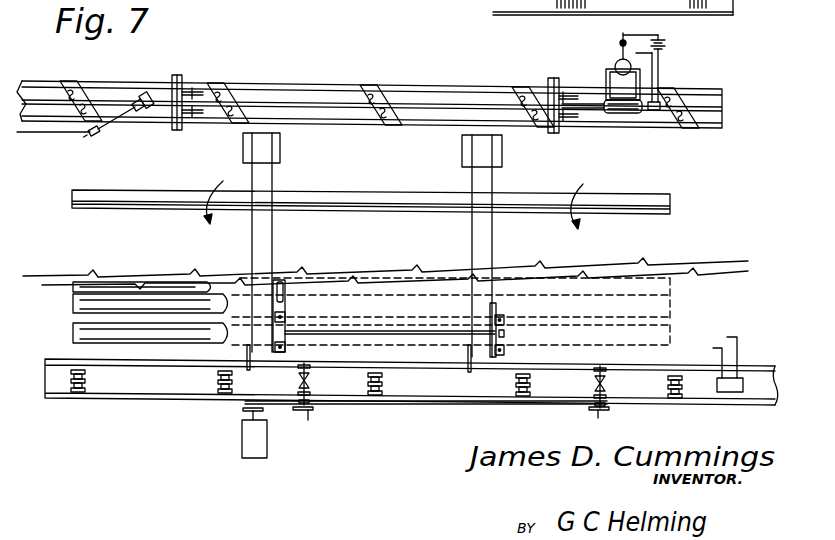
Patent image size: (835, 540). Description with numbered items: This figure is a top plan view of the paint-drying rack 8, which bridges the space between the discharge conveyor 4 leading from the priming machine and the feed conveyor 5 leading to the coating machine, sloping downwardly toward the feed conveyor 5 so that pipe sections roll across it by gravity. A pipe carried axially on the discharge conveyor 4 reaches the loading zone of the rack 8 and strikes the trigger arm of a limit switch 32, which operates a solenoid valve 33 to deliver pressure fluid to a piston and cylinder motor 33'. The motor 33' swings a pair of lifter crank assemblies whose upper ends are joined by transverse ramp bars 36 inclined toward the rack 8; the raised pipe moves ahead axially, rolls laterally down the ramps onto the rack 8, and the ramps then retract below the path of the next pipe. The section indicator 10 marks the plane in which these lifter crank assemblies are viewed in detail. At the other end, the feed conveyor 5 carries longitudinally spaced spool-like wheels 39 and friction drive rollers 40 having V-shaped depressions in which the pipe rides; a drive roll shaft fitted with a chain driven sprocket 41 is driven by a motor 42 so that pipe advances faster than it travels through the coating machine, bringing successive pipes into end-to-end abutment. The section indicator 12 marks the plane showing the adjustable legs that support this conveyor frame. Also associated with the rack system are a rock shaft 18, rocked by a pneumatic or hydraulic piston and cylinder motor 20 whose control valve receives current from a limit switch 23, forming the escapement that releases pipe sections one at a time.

The discharge conveyor 4 is at (276, 80).
The feed conveyor 5 is at (119, 395).
The paint-drying rack 8 is at (273, 175).
The section line 10- 10 is at (667, 110).
The pipes / section line 12- 12 is at (77, 317).
The rock shaft 18 is at (394, 333).
The piston and cylinder motor 20 is at (282, 281).
The limit switch 23 is at (745, 383).
The limit switch 32 is at (650, 112).
The solenoid valve 33 is at (621, 67).
The piston and cylinder motor 33' is at (602, 125).
The transverse ramp bar 36 is at (180, 74).
The spool-like wheels 39 is at (217, 384).
The friction drive rollers 40 is at (313, 382).
The chain driven sprocket 41 is at (308, 418).
The motor 42 is at (244, 447).